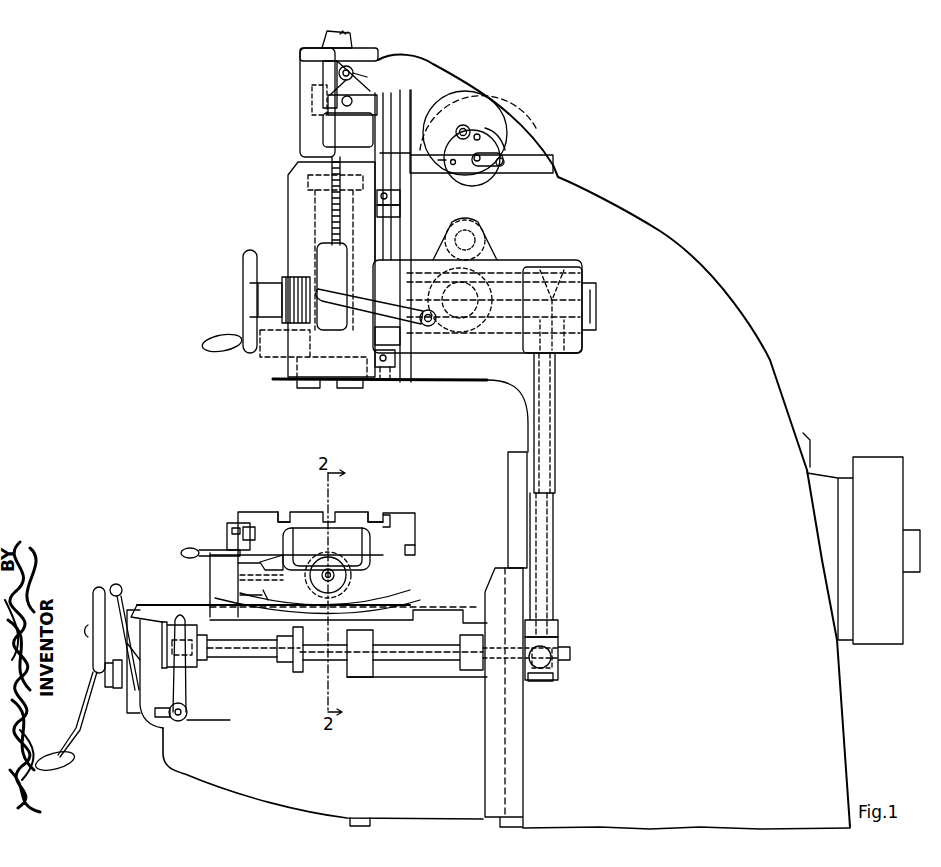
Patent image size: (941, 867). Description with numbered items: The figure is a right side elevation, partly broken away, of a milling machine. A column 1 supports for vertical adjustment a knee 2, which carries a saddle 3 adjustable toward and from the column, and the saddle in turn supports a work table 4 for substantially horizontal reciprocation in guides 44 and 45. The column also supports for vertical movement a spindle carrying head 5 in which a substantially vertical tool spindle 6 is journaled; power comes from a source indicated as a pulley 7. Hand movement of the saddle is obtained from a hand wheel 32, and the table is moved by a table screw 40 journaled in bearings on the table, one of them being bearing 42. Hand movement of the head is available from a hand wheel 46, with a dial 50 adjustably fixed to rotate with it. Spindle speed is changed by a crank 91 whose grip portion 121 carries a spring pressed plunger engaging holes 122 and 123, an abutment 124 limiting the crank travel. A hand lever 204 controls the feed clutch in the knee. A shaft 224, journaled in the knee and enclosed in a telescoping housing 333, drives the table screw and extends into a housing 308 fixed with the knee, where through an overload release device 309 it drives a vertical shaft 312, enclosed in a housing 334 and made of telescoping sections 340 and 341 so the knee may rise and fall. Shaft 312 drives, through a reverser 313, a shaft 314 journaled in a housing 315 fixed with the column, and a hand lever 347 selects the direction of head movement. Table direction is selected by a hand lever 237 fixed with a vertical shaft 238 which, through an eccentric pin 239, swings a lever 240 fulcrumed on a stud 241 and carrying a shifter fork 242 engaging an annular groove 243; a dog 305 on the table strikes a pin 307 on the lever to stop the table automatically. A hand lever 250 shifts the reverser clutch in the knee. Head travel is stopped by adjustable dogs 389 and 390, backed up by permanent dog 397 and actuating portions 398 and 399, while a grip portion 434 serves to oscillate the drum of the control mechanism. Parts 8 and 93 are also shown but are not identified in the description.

The column 1 is at (788, 385).
The knee 2 is at (220, 770).
The saddle 3 is at (402, 582).
The work table 4 is at (417, 527).
The spindle carrying head 5 is at (288, 206).
The tool spindle 6 is at (295, 390).
The pulley 7 is at (885, 465).
The foot pedal 8 is at (92, 728).
The hand wheel 32 is at (303, 672).
The table screw 40 is at (345, 590).
The bearing 42 is at (371, 543).
The guide 44 is at (272, 562).
The guide 45 is at (415, 559).
The hand wheel 46 is at (243, 272).
The dial 50 is at (292, 268).
The crank 91 is at (485, 172).
The cover 93 is at (462, 76).
The grip portion 121 is at (505, 168).
The hole 122 is at (444, 163).
The hole 123 is at (480, 117).
The abutment 124 is at (500, 127).
The hand lever 204 is at (118, 584).
The shaft 224 is at (230, 648).
The hand lever 237 is at (190, 547).
The substantially vertical shaft 238 is at (235, 560).
The eccentric pin 239 is at (235, 582).
The lever 240 is at (235, 598).
The stud 241 is at (243, 593).
The shifter fork 242 is at (304, 523).
The annular groove 243 is at (340, 527).
The hand lever 250 is at (188, 690).
The dog 305 is at (240, 522).
The pin 307 is at (249, 528).
The housing 308 is at (523, 683).
The overload release device 309 is at (558, 670).
The vertical shaft 312 is at (563, 566).
The reverser 313 is at (567, 270).
The shaft 314 is at (512, 293).
The housing 315 is at (510, 263).
The telescoping housing 333 is at (447, 665).
The housing 334 is at (557, 585).
The telescoping section 340 is at (543, 600).
The telescoping section 341 is at (555, 383).
The hand lever 347 is at (310, 335).
The dog 389 is at (400, 212).
The dog 390 is at (412, 357).
The permanent dog 397 is at (400, 380).
The actuating portion 398 is at (400, 200).
The actuating portion 399 is at (403, 360).
The grip portion 434 is at (323, 106).